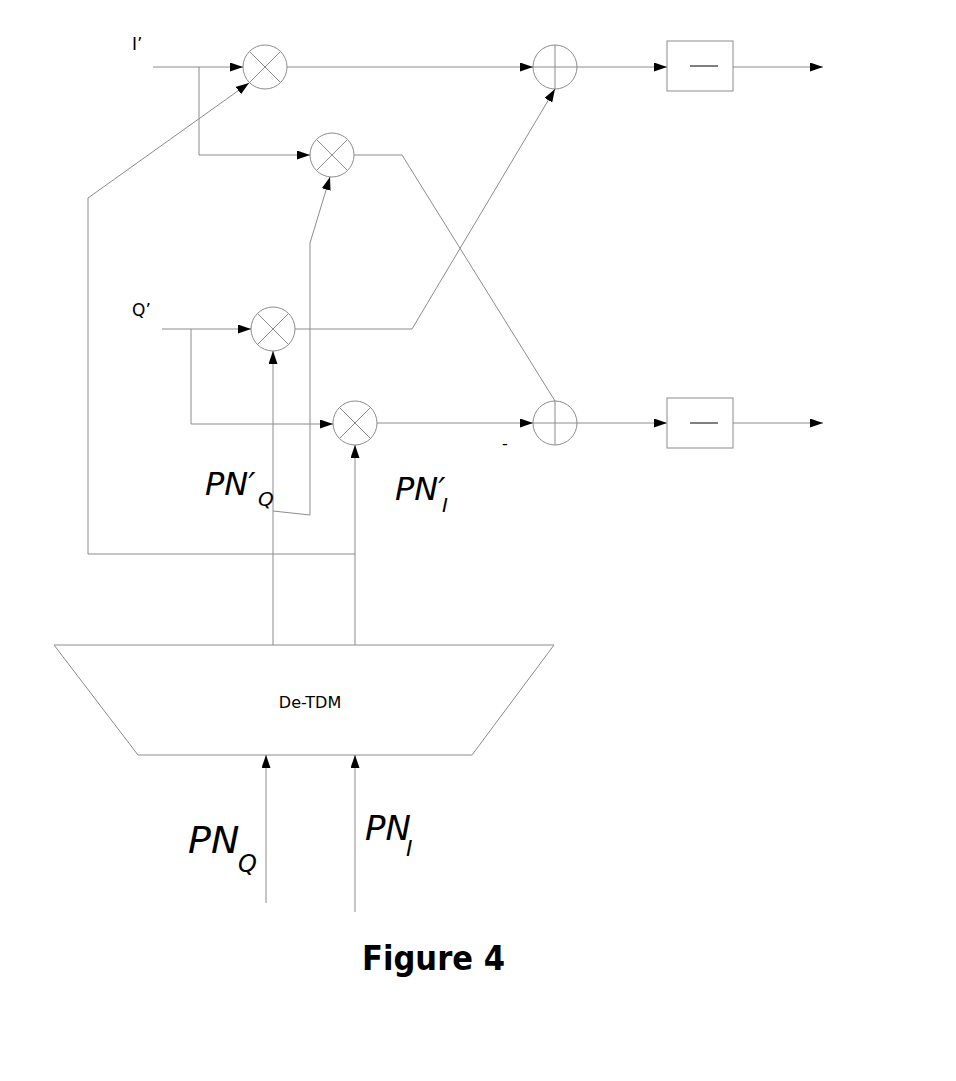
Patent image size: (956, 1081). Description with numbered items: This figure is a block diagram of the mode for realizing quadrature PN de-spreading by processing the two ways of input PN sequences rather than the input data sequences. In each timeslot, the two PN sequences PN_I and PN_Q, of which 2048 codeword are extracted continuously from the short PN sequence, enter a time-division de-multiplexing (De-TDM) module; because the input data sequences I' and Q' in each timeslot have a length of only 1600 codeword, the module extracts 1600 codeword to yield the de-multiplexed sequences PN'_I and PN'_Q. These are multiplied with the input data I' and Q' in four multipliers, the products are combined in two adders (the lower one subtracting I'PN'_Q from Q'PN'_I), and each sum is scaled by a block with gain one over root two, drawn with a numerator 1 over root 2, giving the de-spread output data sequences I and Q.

The data sequence I is at (694, 51).
The data sequence Q is at (696, 397).
The 1600 codeword 1600 is at (398, 545).
The 2048 codeword 2048 is at (192, 829).
The 1/sqrt(2) scaling block (I) 1 is at (700, 66).
The 1/sqrt(2) scaling block (Q) 2 is at (700, 423).